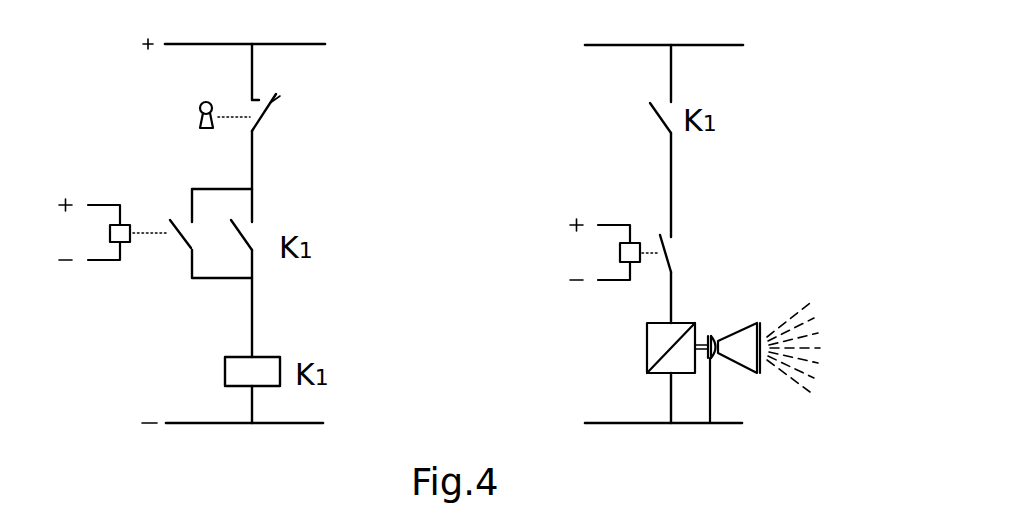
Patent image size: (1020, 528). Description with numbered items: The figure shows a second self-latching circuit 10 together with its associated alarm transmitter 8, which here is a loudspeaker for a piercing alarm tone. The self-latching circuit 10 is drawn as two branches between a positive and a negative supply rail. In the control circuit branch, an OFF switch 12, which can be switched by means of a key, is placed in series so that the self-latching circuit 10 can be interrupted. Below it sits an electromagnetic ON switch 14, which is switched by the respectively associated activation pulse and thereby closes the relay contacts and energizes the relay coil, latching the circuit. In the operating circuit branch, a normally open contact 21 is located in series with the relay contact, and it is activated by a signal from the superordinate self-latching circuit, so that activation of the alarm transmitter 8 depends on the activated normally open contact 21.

The alarm transmitter 8 is at (714, 306).
The self-latching circuit 10 is at (345, 217).
The OFF switch 12 is at (268, 107).
The electromagnetic ON switch 14 is at (119, 233).
The normally open contact 21 is at (632, 252).